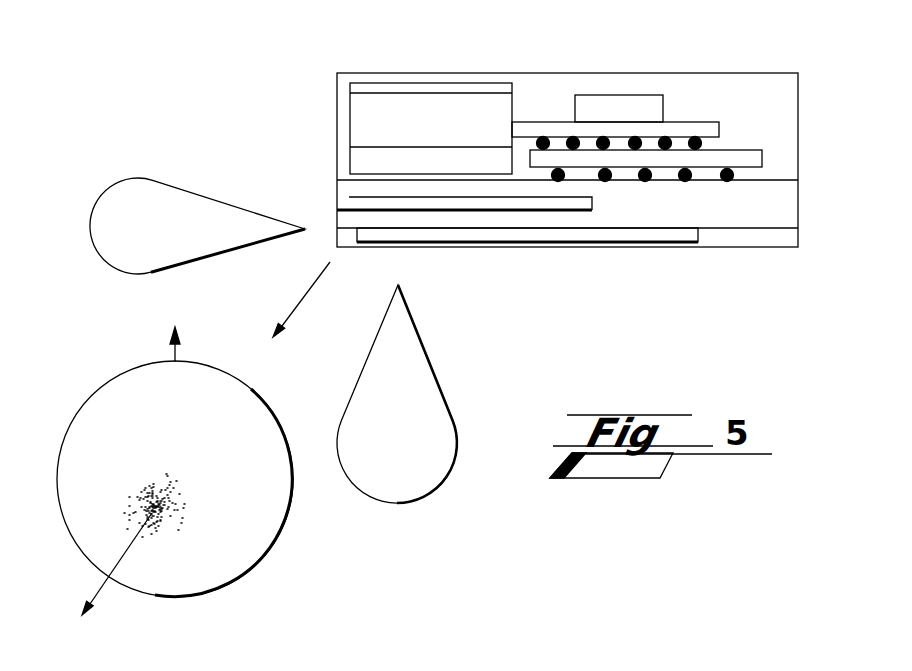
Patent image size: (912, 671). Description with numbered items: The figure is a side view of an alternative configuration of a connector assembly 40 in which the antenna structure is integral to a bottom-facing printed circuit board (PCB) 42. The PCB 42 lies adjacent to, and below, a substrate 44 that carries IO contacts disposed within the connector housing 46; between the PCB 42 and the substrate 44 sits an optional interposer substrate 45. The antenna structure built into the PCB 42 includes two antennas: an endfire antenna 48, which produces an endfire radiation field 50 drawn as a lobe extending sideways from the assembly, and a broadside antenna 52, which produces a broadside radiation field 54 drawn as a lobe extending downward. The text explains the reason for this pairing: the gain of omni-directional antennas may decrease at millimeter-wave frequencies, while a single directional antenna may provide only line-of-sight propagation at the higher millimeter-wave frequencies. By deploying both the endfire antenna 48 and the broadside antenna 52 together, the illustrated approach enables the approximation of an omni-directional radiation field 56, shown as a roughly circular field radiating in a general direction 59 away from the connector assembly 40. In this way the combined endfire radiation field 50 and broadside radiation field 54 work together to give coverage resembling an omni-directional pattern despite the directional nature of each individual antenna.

The connector assembly 40 is at (617, 45).
The printed circuit board (PCB) 42 is at (703, 222).
The substrate 44 is at (720, 123).
The interposer substrate 45 is at (742, 150).
The connector housing 46 is at (365, 84).
The endfire antenna 48 is at (349, 200).
The endfire radiation field 50 is at (153, 177).
The broadside antenna 52 is at (452, 240).
The broadside radiation field 54 is at (427, 358).
The omni-directional radiation field 56 is at (245, 380).
The general direction 59 is at (300, 297).